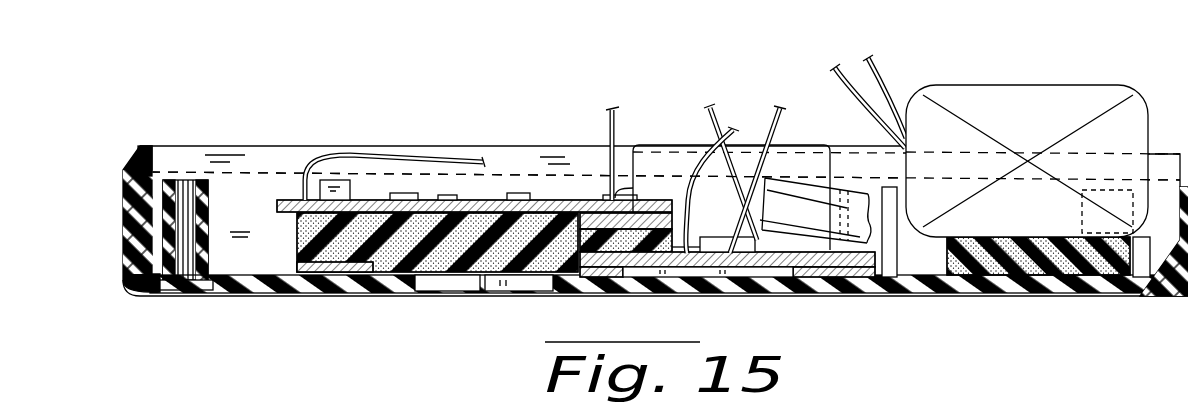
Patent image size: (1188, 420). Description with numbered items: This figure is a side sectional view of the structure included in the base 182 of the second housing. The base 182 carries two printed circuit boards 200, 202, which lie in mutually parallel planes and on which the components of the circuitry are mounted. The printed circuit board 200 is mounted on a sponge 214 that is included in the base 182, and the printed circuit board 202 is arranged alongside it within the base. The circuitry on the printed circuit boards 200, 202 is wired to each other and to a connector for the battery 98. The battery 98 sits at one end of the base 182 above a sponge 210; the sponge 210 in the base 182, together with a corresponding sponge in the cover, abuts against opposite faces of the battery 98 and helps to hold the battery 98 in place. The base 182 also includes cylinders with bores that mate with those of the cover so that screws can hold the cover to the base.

The battery 98 is at (1062, 93).
The base 182 is at (1127, 297).
The printed circuit board 200 is at (509, 200).
The printed circuit board 202 is at (814, 258).
The sponge 210 is at (1020, 276).
The sponge 214 is at (478, 258).